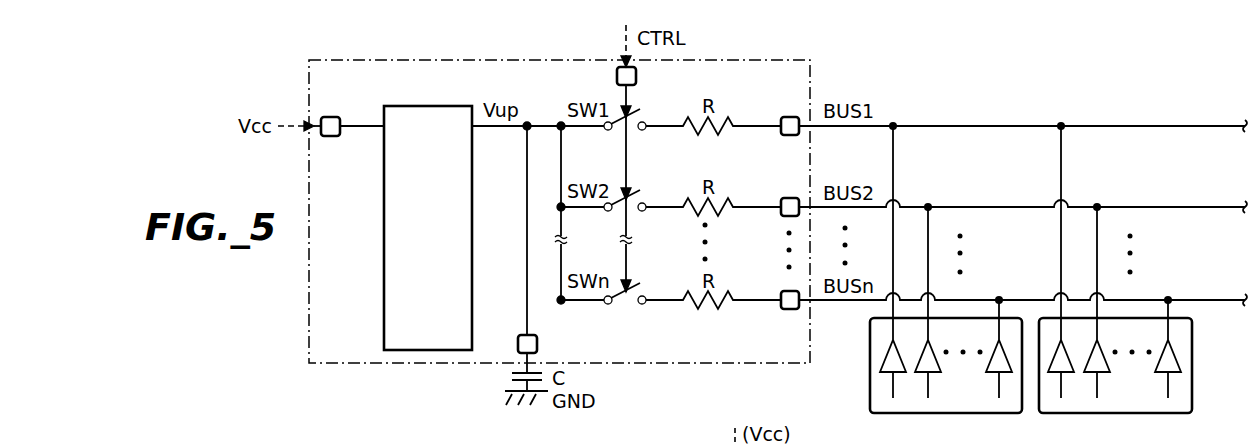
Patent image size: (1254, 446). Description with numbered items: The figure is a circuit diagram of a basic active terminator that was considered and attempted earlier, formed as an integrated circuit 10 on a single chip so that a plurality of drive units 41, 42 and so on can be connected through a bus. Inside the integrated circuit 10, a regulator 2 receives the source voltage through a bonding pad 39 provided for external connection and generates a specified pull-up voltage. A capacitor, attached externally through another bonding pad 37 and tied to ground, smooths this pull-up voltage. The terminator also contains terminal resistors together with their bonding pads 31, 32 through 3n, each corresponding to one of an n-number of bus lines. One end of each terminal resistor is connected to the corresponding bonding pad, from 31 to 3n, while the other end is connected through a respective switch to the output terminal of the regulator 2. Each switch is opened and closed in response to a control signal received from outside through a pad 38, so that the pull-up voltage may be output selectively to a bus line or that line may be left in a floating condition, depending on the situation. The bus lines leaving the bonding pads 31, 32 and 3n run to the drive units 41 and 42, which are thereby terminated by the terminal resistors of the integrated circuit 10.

The integrated circuit 10 is at (486, 60).
The regulator 2 is at (432, 106).
The bonding pad 39 is at (329, 117).
The pad 38 is at (636, 80).
The bonding pad 31 is at (790, 117).
The bonding pad 32 is at (790, 198).
The bonding pad 3n is at (790, 309).
The bonding pad 37 is at (537, 345).
The drive unit 41 is at (870, 377).
The drive unit 42 is at (1192, 370).